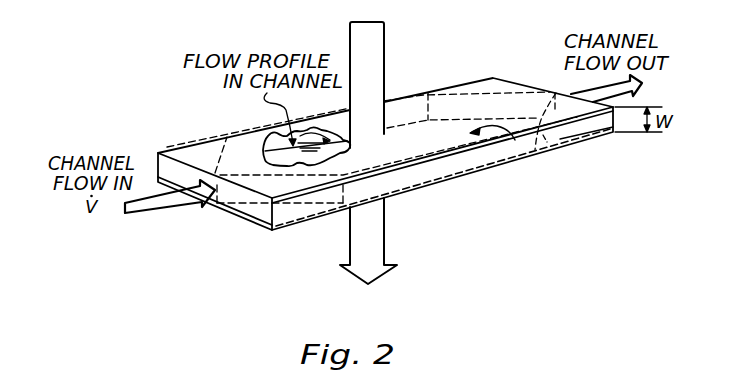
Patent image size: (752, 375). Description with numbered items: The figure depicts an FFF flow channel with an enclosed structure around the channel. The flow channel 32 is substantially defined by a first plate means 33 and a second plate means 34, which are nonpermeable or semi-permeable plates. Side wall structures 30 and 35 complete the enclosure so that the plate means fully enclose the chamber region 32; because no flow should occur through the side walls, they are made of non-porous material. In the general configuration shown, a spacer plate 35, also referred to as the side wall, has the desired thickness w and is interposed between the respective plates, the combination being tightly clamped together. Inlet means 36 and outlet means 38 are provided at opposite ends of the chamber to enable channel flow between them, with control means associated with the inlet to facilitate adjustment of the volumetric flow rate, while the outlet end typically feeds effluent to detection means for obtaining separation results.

The side wall structure 30 is at (424, 96).
The flow channel 32 is at (274, 147).
The first plate means 33 is at (515, 140).
The second plate means 34 is at (461, 175).
The spacer plate 35 is at (579, 127).
The inlet means 36 is at (212, 196).
The outlet means 38 is at (556, 93).